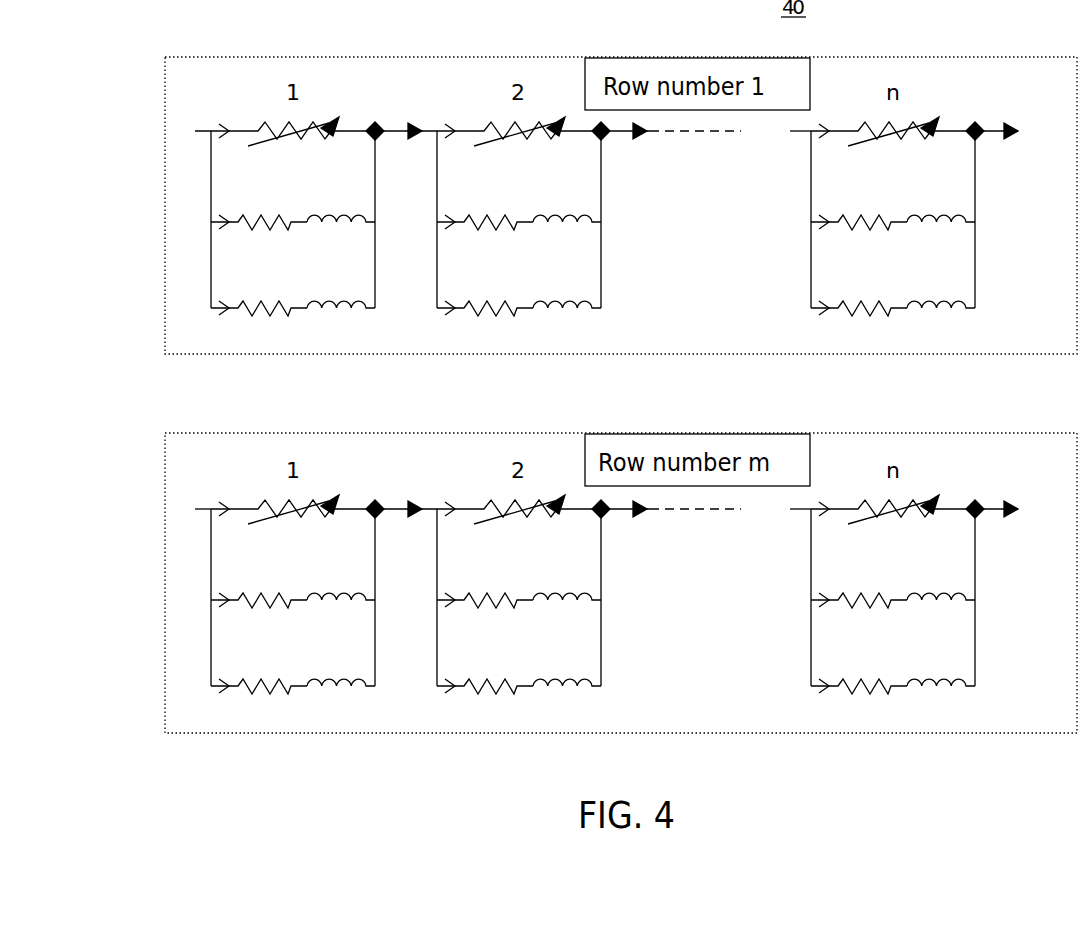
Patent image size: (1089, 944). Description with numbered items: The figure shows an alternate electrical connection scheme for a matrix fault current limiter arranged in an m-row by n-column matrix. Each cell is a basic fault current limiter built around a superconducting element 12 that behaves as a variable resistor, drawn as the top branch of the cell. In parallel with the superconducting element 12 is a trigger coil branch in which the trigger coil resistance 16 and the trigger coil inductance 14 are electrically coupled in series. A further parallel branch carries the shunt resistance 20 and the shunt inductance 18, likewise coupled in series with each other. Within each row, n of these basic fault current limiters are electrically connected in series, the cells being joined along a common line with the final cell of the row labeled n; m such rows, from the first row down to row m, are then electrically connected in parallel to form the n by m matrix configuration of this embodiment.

The trigger coil inductance 14 is at (312, 117).
The trigger coil resistance 16 is at (245, 213).
The superconducting element 12 is at (352, 213).
The shunt resistance 20 is at (258, 314).
The shunt inductance 18 is at (345, 313).